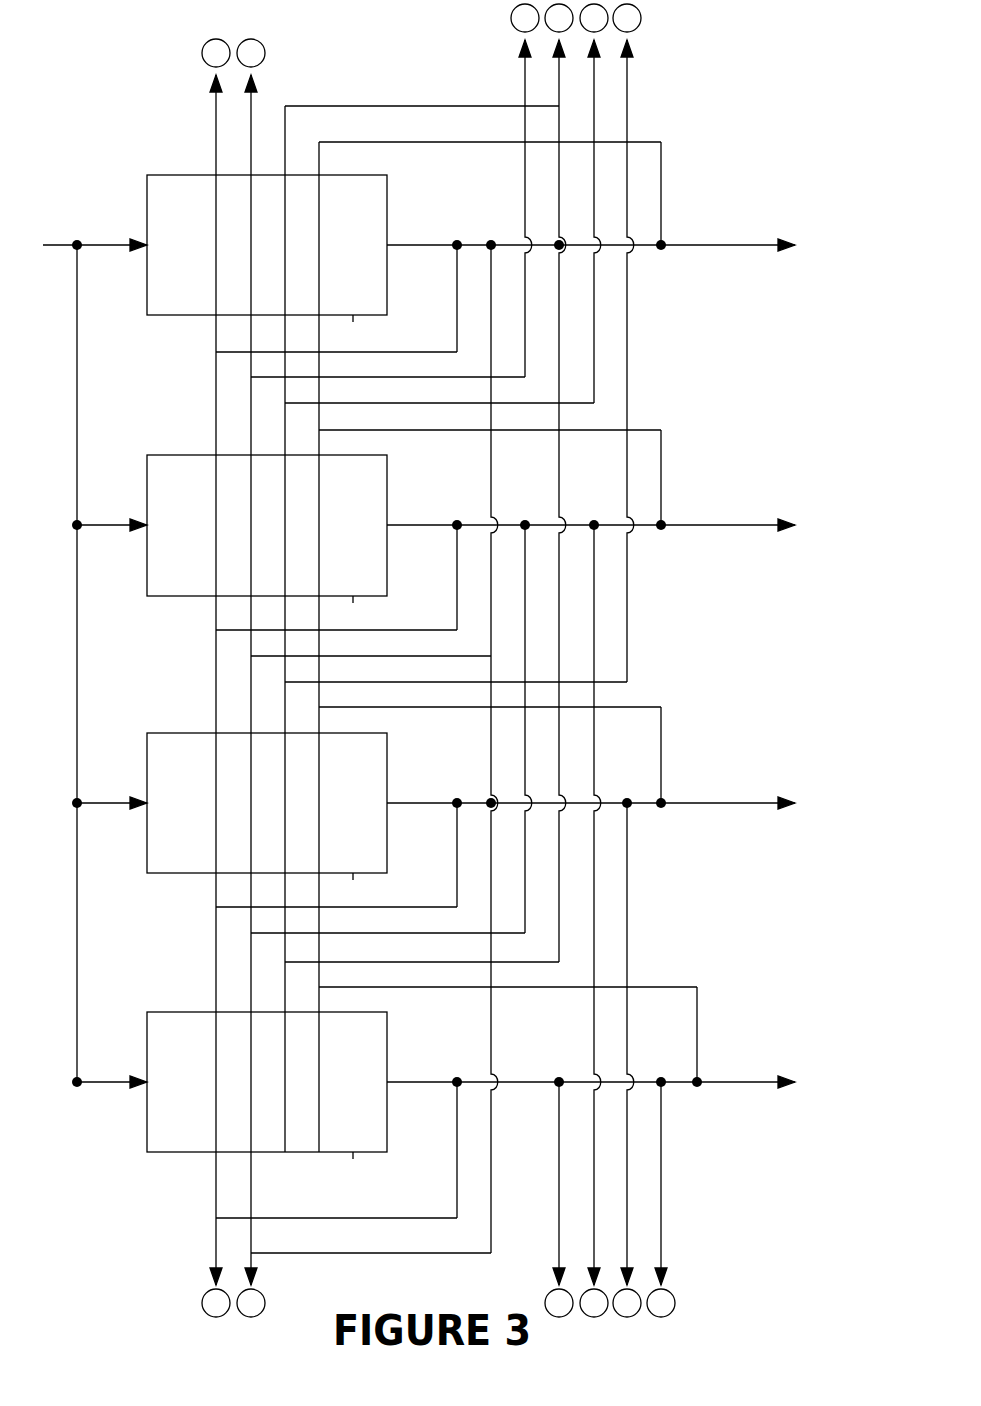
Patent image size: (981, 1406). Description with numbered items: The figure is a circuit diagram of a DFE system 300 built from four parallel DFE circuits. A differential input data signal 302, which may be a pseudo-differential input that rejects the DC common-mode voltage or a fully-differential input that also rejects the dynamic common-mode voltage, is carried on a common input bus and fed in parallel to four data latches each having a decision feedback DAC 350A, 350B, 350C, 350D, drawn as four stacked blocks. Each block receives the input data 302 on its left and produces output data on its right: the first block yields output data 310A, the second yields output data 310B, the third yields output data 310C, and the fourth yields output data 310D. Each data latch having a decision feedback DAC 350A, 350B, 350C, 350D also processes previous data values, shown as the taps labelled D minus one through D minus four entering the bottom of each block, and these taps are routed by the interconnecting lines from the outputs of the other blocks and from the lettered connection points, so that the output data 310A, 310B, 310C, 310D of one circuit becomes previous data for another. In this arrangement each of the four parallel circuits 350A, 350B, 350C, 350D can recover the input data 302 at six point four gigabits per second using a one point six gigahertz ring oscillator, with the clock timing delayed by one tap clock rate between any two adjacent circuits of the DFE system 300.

The DFE system 300 is at (430, 660).
The differential input data 302 is at (74, 247).
The output data 310A is at (746, 247).
The output data 310B is at (746, 527).
The output data 310C is at (746, 805).
The output data 310D is at (746, 1084).
The data latch having decision feedback DAC 350A is at (388, 285).
The data latch having decision feedback DAC 350B is at (388, 565).
The data latch having decision feedback DAC 350C is at (388, 843).
The data latch having decision feedback DAC 350D is at (388, 1122).